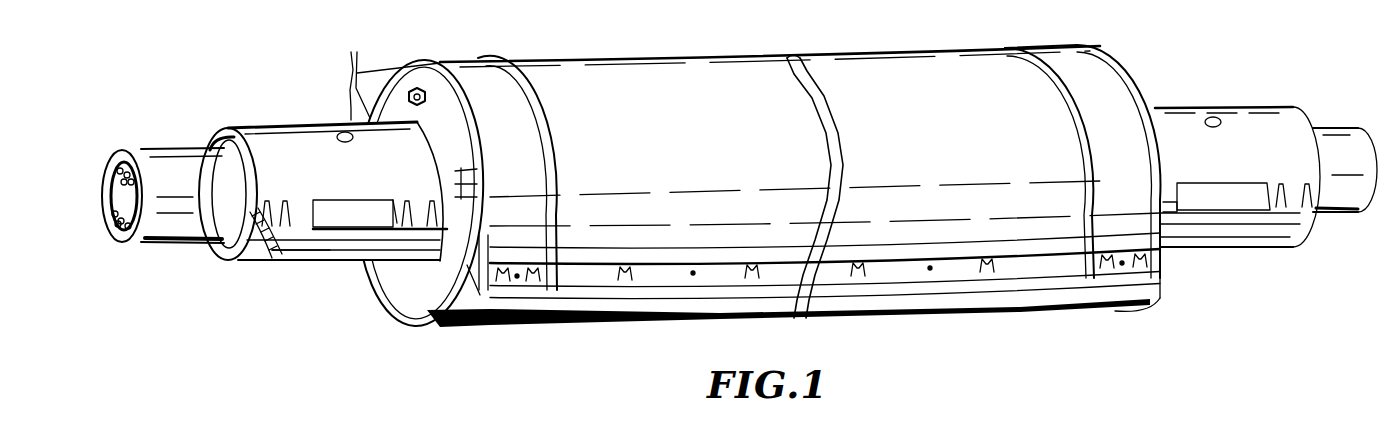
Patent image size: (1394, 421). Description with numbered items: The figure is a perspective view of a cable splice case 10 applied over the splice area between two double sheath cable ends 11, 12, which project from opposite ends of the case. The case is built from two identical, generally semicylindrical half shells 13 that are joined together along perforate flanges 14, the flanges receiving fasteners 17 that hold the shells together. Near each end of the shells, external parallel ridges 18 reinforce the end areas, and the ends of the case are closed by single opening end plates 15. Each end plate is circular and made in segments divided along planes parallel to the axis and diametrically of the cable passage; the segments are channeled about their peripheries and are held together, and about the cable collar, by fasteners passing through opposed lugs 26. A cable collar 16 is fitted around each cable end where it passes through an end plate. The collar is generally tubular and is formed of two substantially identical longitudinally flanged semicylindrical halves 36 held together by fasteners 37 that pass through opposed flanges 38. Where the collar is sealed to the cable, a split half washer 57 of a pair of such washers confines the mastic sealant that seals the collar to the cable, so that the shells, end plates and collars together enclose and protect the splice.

The cable splice case 10 is at (843, 46).
The cable end 11 is at (153, 148).
The cable end 12 is at (1345, 127).
The half shell 13 is at (770, 62).
The flange 14 is at (874, 332).
The end plate 15 is at (444, 92).
The cable collar 16 is at (274, 122).
The fastener 17 is at (638, 270).
The external parallel ridge 18 is at (533, 110).
The lug 26 is at (476, 177).
The semicylindrical half 36 is at (248, 197).
The fastener 37 is at (285, 203).
The flange 38 is at (303, 241).
The split half washer 57 is at (214, 140).